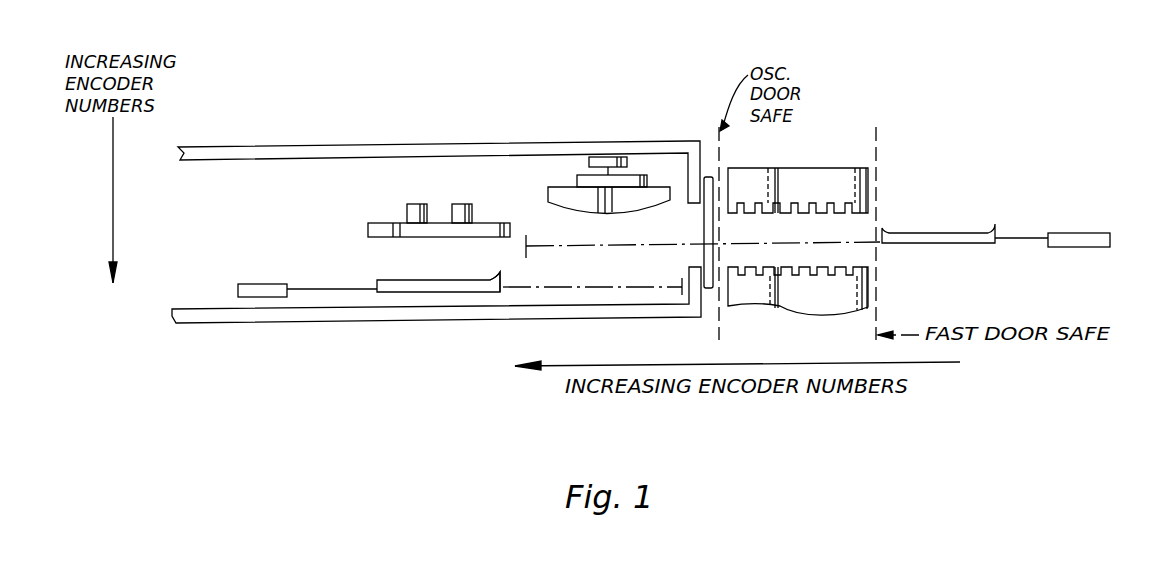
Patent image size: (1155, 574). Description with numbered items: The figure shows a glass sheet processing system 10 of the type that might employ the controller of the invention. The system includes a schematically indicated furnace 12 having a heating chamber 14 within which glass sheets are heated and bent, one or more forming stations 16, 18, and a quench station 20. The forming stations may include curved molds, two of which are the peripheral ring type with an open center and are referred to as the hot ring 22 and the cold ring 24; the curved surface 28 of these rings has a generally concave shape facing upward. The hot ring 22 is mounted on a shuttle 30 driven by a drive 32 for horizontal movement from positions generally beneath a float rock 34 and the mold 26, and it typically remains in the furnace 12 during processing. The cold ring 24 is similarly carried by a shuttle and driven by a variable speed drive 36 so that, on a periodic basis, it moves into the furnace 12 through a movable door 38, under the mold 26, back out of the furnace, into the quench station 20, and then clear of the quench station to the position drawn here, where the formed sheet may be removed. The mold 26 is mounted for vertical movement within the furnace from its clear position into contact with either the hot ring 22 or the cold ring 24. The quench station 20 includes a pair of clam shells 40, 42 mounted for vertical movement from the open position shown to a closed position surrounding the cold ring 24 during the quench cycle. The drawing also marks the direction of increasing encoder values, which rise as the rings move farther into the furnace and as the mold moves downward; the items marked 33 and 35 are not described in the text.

The glass sheet processing system 10 is at (658, 114).
The furnace 12 is at (510, 142).
The heating chamber 14 is at (433, 175).
The forming station 16 is at (447, 300).
The forming station 18 is at (612, 297).
The quench station 20 is at (790, 315).
The hot ring 22 is at (378, 283).
The cold ring 24 is at (990, 235).
The mold 26 is at (575, 197).
The curved surface 28 is at (497, 278).
The shuttle 30 is at (323, 290).
The drive 32 is at (254, 283).
The small block 33 is at (610, 157).
The float rock 34 is at (378, 226).
The rod 35 is at (1025, 243).
The variable speed drive 36 is at (1083, 248).
The movable door 38 is at (709, 292).
The clam shell 40 is at (812, 178).
The clam shell 42 is at (832, 296).